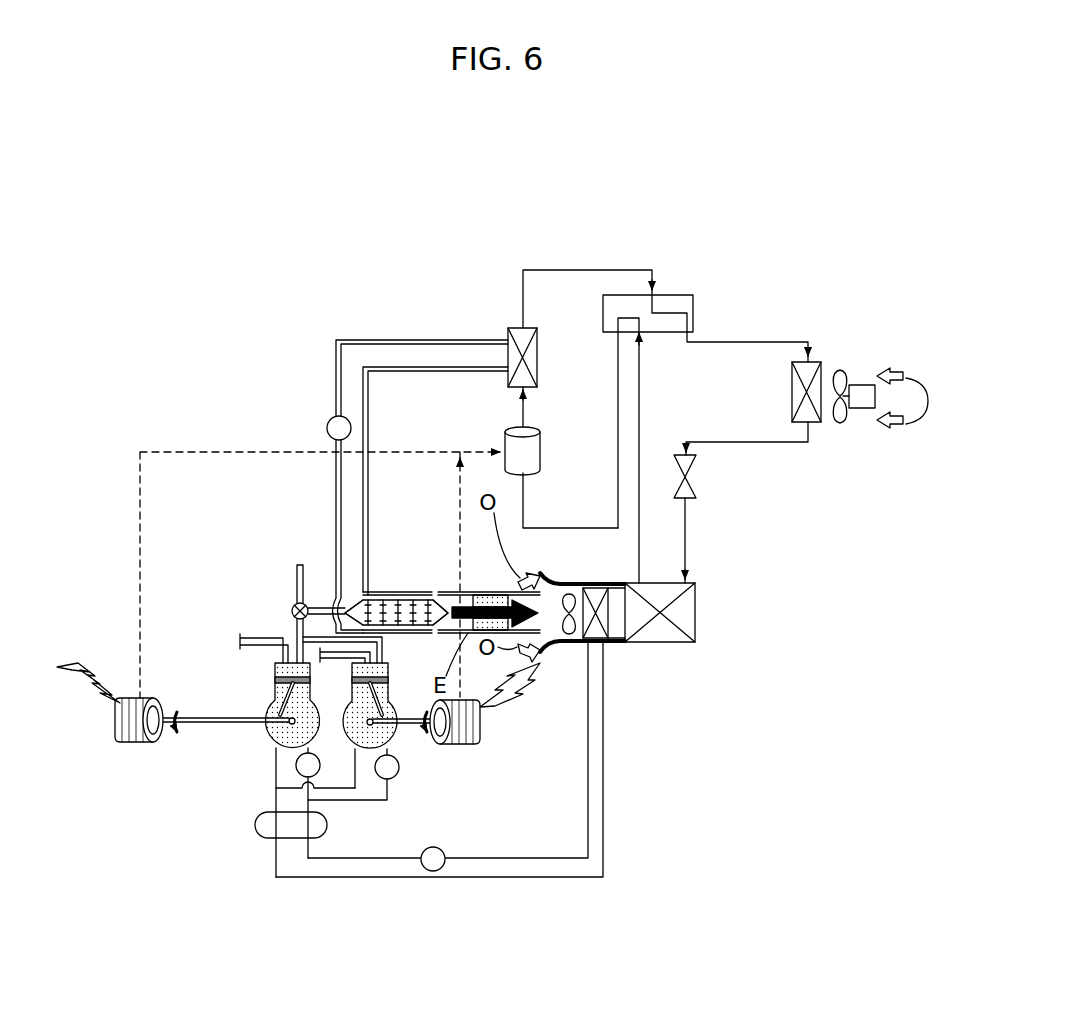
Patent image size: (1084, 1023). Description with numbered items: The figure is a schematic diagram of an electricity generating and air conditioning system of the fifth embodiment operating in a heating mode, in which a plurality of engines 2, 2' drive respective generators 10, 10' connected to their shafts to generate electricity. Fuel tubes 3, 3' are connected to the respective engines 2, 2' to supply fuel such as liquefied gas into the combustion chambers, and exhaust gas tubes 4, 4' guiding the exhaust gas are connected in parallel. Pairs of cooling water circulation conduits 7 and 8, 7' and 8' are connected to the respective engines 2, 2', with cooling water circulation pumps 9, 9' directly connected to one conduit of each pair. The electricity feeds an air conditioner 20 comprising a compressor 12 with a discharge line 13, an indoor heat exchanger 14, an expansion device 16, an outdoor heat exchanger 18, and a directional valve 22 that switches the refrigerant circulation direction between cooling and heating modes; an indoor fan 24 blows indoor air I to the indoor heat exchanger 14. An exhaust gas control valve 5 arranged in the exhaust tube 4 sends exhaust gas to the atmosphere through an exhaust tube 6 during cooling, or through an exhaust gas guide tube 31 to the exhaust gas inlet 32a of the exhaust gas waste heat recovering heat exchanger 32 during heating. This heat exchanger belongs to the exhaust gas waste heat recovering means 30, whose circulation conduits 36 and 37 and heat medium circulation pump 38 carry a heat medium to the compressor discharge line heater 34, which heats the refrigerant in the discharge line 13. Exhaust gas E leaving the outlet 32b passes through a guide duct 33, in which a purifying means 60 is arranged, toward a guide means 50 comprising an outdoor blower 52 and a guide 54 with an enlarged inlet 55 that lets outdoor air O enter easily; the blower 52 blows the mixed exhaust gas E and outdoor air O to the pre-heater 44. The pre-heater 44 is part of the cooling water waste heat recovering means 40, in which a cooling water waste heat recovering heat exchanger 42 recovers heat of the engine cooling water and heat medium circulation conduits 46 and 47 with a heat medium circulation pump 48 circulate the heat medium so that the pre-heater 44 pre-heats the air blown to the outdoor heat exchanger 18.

The engine 2 is at (250, 717).
The engine 2' is at (400, 719).
The fuel tube 3 is at (261, 630).
The fuel tube 3' is at (376, 665).
The exhaust tube 4 is at (264, 614).
The exhaust gas tube 4' is at (368, 649).
The exhaust gas control valve 5 is at (292, 605).
The exhaust tube 6 is at (299, 572).
The cooling water circulation conduit 7 is at (277, 812).
The cooling water circulation conduit 7' is at (380, 788).
The cooling water circulation conduit 8 is at (326, 750).
The cooling water circulation conduit 8' is at (375, 783).
The cooling water circulation pump 9 is at (274, 805).
The cooling water circulation pump 9' is at (413, 776).
The generator 10 is at (110, 730).
The generator 10' is at (490, 717).
The compressor 12 is at (540, 460).
The discharge line 13 is at (525, 411).
The indoor heat exchanger 14 is at (792, 378).
The expansion device 16 is at (694, 490).
The outdoor heat exchanger 18 is at (695, 592).
The air conditioner 20 is at (745, 228).
The directional valve 22 is at (693, 295).
The indoor fan 24 is at (841, 418).
The exhaust gas waste heat recovering means 30 is at (390, 333).
The exhaust gas guide tube 31 is at (323, 607).
The exhaust gas waste heat recovering heat exchanger 32 is at (388, 598).
The exhaust gas inlet 32a is at (346, 606).
The outlet 32b is at (440, 600).
The guide duct 33 is at (527, 592).
The compressor discharge line heater 34 is at (508, 335).
The circulation conduit 36 is at (336, 382).
The circulation conduit 37 is at (417, 372).
The heat medium circulation pump 38 is at (327, 429).
The cooling water waste heat recovering means 40 is at (616, 842).
The cooling water waste heat recovering heat exchanger 42 is at (256, 832).
The pre-heater 44 is at (597, 590).
The heat medium circulation conduit 46 is at (548, 858).
The heat medium circulation conduit 47 is at (557, 878).
The heat medium circulation pump 48 is at (438, 849).
The guide means 50 is at (554, 662).
The outdoor blower 52 is at (570, 590).
The guide 54 is at (577, 650).
The enlarged inlet 55 is at (545, 575).
The purifying means 60 is at (475, 597).